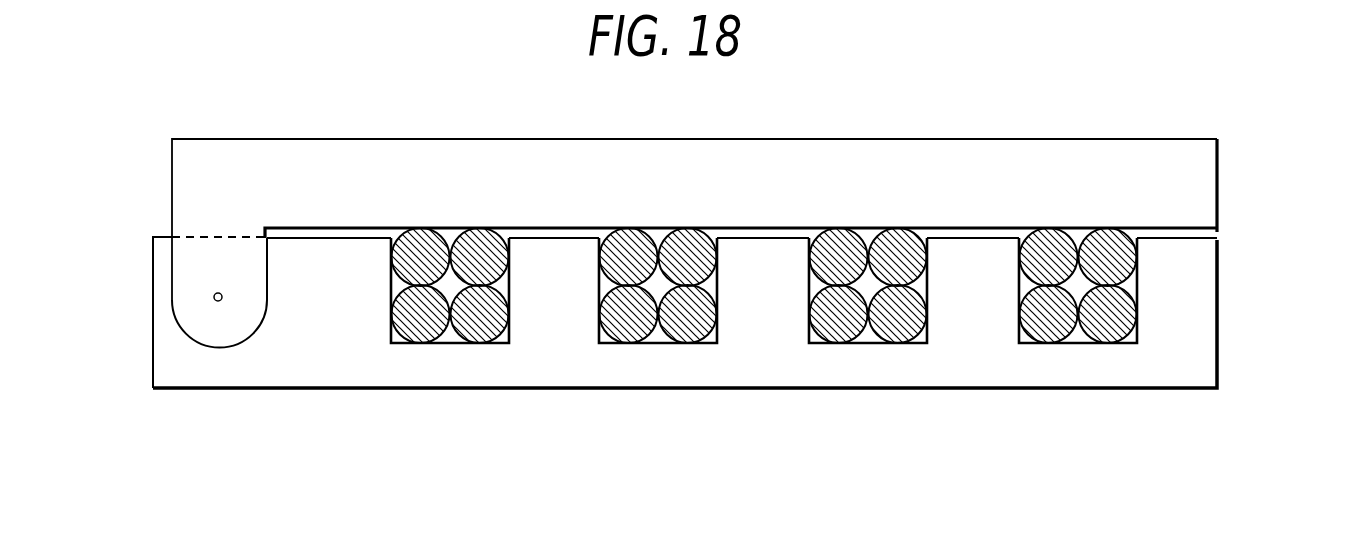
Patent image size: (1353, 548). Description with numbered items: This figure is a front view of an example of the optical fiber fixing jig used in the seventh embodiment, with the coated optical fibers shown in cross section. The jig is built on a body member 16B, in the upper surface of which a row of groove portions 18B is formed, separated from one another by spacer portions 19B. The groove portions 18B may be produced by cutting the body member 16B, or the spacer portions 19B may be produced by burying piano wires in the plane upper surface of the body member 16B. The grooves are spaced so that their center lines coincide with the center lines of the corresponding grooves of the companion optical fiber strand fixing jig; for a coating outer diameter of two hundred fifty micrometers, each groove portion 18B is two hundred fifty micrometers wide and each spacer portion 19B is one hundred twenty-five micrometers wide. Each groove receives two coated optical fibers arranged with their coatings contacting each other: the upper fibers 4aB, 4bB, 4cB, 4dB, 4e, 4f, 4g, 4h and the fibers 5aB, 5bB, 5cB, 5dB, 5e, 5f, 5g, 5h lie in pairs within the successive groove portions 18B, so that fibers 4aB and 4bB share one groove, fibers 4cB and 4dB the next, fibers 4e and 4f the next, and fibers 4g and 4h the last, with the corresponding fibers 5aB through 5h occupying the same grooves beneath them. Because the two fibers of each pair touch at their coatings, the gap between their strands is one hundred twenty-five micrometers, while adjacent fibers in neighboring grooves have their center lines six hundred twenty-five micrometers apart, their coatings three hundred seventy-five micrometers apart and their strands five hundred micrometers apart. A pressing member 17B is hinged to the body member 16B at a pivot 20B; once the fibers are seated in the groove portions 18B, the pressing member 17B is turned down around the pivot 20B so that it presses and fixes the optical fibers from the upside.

The optical fiber 4aB is at (423, 246).
The optical fiber 4bB is at (481, 246).
The optical fiber 4cB is at (628, 246).
The optical fiber 4dB is at (697, 246).
The optical fiber 4e is at (848, 246).
The optical fiber 4f is at (910, 246).
The optical fiber 4g is at (1045, 246).
The optical fiber 4h is at (1105, 246).
The optical fiber 5aB is at (418, 322).
The optical fiber 5bB is at (483, 322).
The optical fiber 5cB is at (628, 325).
The optical fiber 5dB is at (686, 325).
The optical fiber 5e is at (838, 325).
The optical fiber 5f is at (898, 325).
The optical fiber 5g is at (1050, 327).
The optical fiber 5h is at (1111, 327).
The body member 16B is at (303, 370).
The pressing member 17B is at (251, 152).
The groove portion 18B is at (1148, 292).
The spacer portion 19B is at (960, 290).
The pivot 20B is at (218, 301).